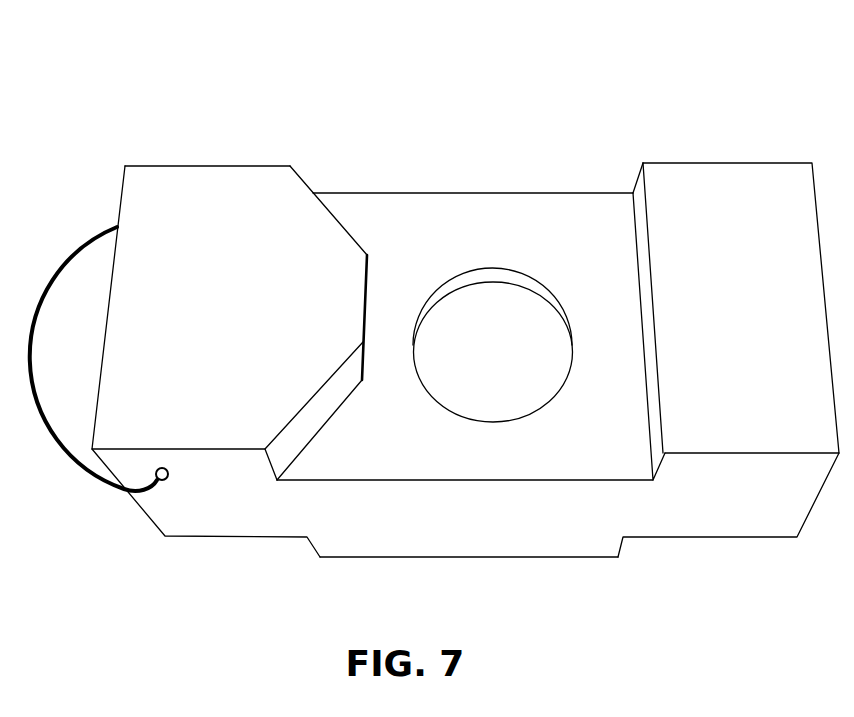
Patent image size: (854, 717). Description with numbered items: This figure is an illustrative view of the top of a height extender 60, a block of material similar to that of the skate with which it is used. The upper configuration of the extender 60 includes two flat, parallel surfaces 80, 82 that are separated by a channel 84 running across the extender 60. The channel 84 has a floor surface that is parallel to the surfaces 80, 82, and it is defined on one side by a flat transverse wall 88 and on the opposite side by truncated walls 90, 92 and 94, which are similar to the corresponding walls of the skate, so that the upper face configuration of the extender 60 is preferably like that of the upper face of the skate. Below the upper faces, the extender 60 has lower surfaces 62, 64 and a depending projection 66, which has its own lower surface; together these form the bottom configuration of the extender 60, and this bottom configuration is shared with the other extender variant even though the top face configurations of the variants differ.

The height extender 60 is at (763, 134).
The lower surface 62 is at (728, 538).
The lower surface 64 is at (230, 539).
The depending projection 66 is at (527, 547).
The flat parallel surface 80 is at (168, 300).
The flat parallel surface 82 is at (725, 297).
The channel 84 is at (347, 177).
The flat transverse wall 88 is at (640, 293).
The truncated wall 90 is at (368, 290).
The truncated wall 92 is at (314, 194).
The truncated wall 94 is at (320, 412).